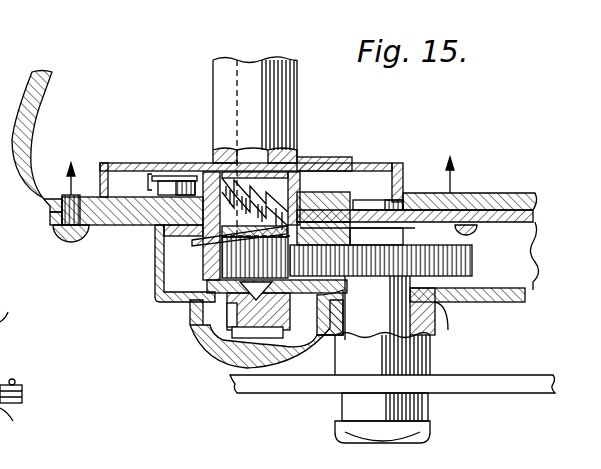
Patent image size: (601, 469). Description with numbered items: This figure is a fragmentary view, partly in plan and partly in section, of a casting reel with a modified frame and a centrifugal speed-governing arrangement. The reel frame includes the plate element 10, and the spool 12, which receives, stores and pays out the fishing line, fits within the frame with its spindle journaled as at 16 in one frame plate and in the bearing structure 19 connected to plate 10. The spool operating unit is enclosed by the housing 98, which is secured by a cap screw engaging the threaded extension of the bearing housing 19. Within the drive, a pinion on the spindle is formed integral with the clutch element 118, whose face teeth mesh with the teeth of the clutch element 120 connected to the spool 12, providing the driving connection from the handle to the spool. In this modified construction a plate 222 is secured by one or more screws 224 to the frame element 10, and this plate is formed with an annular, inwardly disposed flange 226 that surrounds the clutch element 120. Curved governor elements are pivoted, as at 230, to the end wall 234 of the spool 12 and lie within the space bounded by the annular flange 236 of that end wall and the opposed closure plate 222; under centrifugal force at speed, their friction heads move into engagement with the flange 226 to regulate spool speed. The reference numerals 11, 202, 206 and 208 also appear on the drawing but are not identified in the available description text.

The plate element 10 is at (50, 209).
The shaft 11 is at (262, 97).
The spool 12 is at (297, 62).
The journal 16 is at (30, 195).
The bearing structure 19 is at (207, 246).
The housing 98 is at (487, 294).
The clutch element 118 is at (159, 303).
The clutch element 120 is at (207, 174).
The bracket 202 is at (14, 309).
The clamp 206 is at (19, 424).
The clamp block 208 is at (3, 378).
The plate 222 is at (126, 219).
The screw 224 is at (65, 238).
The annular flange 226 is at (183, 174).
The pivot 230 is at (163, 197).
The end wall 234 is at (352, 160).
The annular flange 236 is at (403, 164).